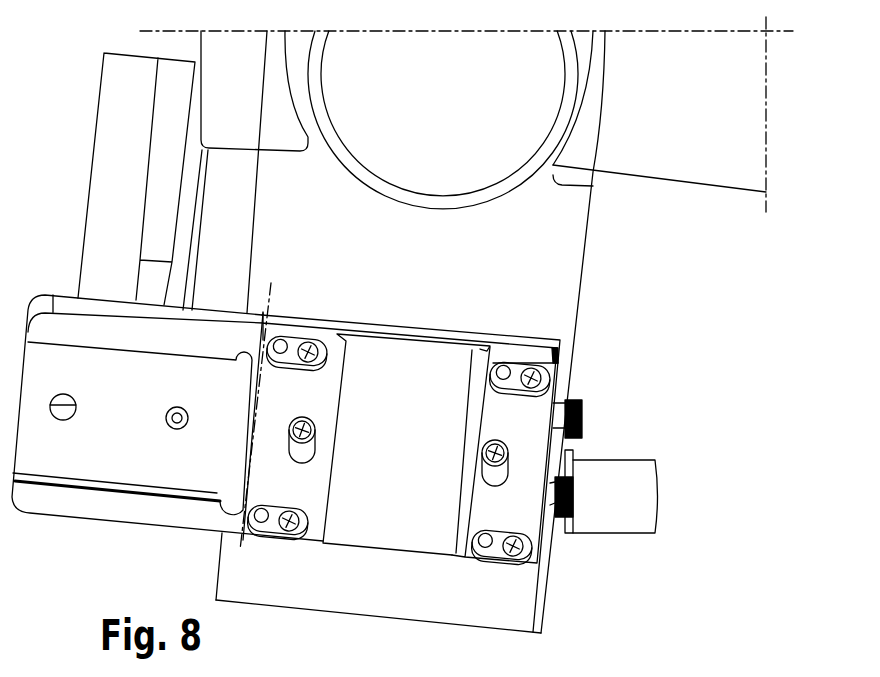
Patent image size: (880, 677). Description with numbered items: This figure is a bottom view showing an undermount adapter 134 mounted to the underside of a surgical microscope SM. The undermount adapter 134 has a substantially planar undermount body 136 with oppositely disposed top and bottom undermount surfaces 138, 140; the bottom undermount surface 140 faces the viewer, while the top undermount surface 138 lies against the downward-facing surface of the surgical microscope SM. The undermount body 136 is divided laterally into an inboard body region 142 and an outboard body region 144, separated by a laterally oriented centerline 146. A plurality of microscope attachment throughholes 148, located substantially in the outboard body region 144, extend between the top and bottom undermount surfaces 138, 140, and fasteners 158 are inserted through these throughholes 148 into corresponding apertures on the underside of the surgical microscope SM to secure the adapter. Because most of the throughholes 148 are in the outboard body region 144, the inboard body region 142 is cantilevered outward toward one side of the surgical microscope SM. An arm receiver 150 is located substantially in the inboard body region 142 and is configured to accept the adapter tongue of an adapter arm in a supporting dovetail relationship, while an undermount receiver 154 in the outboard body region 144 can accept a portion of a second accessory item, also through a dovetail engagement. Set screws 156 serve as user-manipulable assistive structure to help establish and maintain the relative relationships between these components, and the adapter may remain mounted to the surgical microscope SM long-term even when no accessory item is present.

The surgical microscope SM is at (423, 270).
The undermount adapter 134 is at (402, 563).
The undermount body 136 is at (175, 342).
The top undermount surface 138 is at (107, 330).
The bottom undermount surface 140 is at (133, 512).
The inboard body region 142 is at (143, 542).
The outboard body region 144 is at (373, 560).
The centerline 146 is at (272, 290).
The microscope attachment throughholes 148 is at (502, 373).
The arm receiver 150 is at (142, 437).
The undermount receiver 154 is at (417, 457).
The set screws 156 is at (582, 420).
The fasteners 158 is at (503, 374).